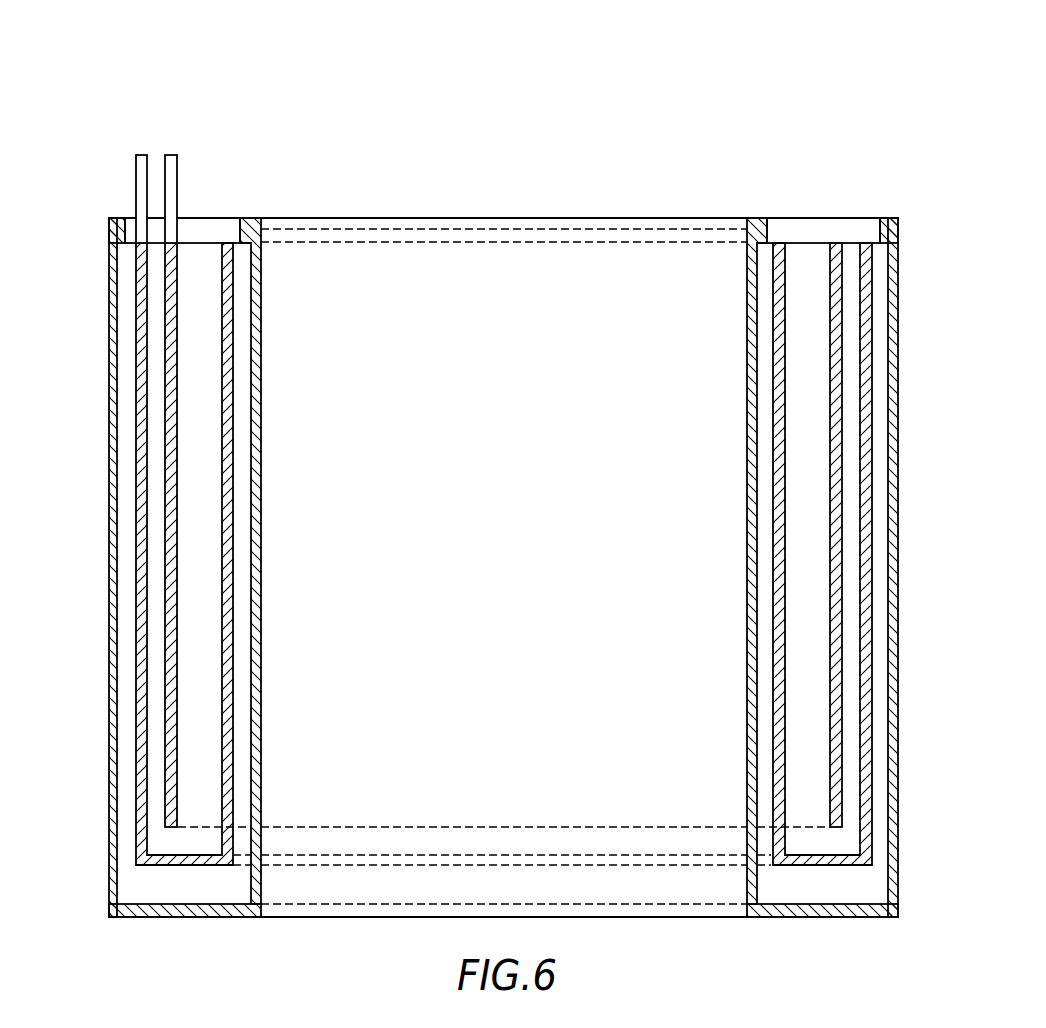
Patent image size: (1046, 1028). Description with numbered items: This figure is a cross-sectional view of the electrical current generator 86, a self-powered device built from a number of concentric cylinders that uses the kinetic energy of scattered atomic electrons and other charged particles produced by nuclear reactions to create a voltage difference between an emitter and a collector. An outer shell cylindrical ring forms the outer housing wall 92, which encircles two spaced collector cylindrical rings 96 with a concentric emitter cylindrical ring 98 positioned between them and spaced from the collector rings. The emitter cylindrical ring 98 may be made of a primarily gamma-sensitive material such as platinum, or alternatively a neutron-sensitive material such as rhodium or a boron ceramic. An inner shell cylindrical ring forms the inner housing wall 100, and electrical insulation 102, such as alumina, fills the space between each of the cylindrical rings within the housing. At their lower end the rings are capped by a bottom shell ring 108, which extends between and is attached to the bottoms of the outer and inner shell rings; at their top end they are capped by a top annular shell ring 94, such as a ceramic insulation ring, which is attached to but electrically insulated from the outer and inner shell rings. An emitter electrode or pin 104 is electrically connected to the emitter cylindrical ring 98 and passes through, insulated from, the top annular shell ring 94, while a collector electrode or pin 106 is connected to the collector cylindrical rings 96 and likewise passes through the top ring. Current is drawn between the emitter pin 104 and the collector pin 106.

The electrical current generator 86 is at (195, 117).
The outer housing wall 92 is at (898, 710).
The top annular shell ring 94 is at (808, 218).
The collector cylindrical rings 96 is at (860, 452).
The emitter cylindrical ring 98 is at (842, 356).
The inner housing wall 100 is at (261, 493).
The electrical insulation 102 is at (152, 340).
The emitter electrode or pin 104 is at (177, 183).
The collector electrode or pin 106 is at (137, 178).
The bottom shell ring 108 is at (198, 920).